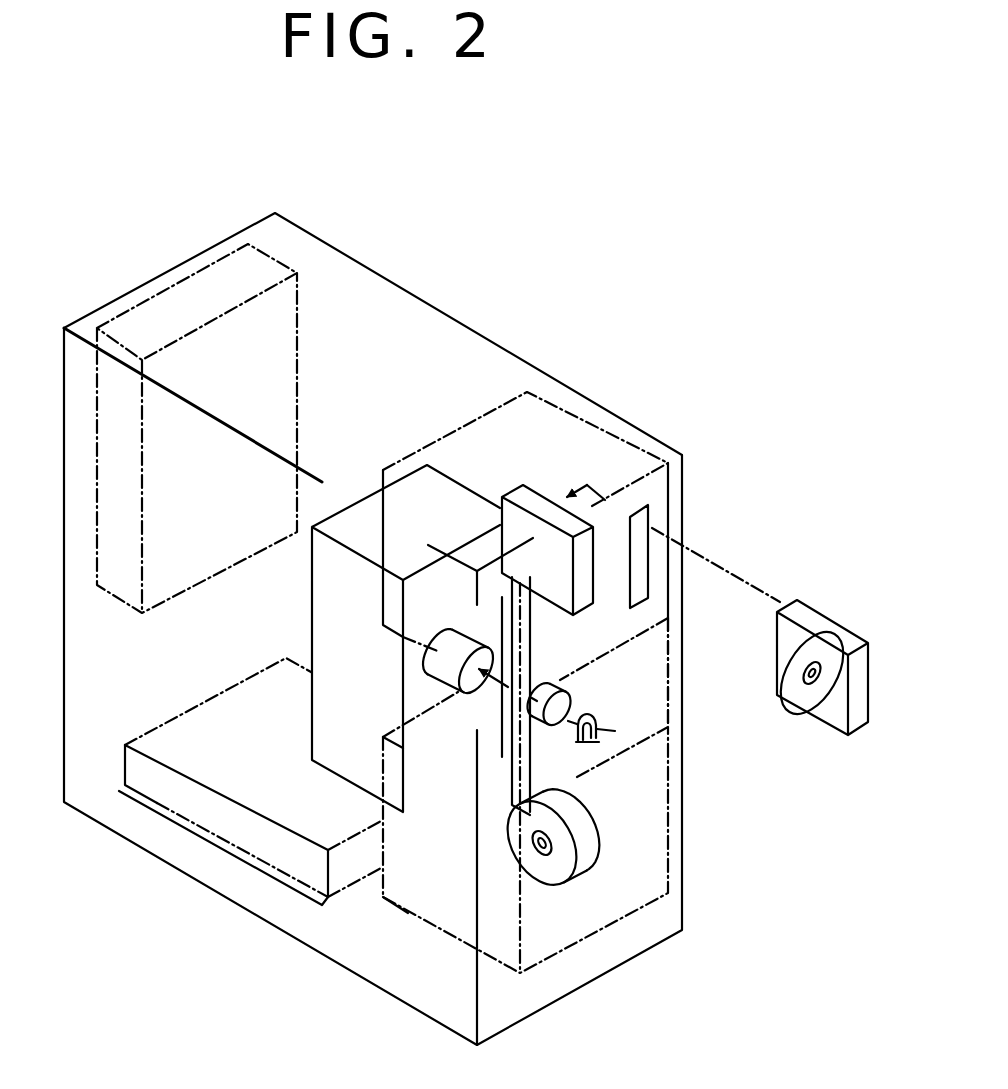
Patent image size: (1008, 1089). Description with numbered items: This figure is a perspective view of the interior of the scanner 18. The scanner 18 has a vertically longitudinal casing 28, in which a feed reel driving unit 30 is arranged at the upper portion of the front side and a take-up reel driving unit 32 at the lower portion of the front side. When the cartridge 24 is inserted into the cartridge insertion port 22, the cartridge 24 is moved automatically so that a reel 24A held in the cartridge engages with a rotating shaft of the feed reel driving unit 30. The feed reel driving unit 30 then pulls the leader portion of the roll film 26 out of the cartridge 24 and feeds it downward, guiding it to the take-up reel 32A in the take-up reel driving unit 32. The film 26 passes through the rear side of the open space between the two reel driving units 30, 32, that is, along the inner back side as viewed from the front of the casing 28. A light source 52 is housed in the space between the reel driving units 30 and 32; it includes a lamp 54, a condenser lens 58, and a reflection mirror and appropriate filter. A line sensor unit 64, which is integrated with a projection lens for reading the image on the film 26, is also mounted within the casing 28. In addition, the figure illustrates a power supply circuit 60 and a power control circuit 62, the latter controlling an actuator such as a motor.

The scanner 18 is at (468, 316).
The casing 28 is at (303, 231).
The power supply circuit 60 is at (300, 316).
The line sensor unit 64 is at (450, 478).
The feed reel driving unit 30 is at (607, 435).
The cartridge insertion port 22 is at (650, 520).
The cartridge 24 is at (840, 622).
The reel 24A is at (818, 703).
The condenser lens 58 is at (560, 688).
The light source 52 is at (600, 709).
The lamp 54 is at (600, 742).
The power control circuit 62 is at (122, 777).
The roll film 26 is at (508, 782).
The take-up reel driving unit 32 is at (667, 893).
The take-up reel 32A is at (563, 867).